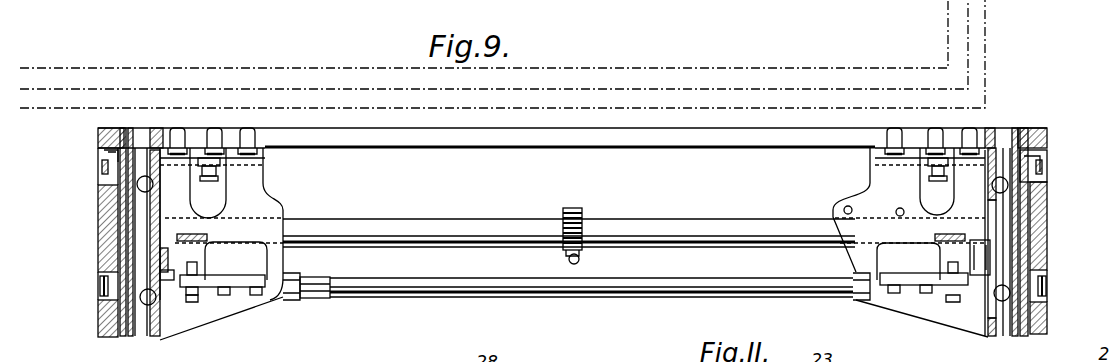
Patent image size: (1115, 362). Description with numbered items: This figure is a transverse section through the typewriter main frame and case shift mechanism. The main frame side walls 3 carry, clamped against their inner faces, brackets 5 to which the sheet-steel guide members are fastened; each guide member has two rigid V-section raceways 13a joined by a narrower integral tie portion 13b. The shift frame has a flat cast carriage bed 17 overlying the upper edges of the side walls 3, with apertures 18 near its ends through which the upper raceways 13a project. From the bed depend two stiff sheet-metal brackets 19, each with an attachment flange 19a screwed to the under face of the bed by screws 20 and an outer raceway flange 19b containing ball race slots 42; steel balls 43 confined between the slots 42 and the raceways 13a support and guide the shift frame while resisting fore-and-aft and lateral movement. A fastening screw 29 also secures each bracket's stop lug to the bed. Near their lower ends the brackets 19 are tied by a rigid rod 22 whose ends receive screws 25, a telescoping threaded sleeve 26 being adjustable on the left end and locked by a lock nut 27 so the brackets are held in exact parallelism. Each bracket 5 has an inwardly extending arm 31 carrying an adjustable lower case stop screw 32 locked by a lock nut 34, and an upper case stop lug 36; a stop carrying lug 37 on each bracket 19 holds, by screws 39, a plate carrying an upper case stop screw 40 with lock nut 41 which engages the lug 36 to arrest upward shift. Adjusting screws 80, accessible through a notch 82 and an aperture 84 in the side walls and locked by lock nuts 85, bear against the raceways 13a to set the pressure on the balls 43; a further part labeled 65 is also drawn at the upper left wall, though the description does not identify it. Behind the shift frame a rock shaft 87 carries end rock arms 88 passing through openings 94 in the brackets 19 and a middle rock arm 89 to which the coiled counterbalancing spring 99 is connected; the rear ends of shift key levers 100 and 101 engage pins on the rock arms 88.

The side wall 3 is at (100, 207).
The bracket 5 is at (100, 262).
The raceway 13a is at (134, 156).
The tie portion 13b is at (100, 250).
The carriage bed 17 is at (97, 137).
The aperture 18 is at (125, 130).
The bracket 19 is at (276, 213).
The attachment flange 19a is at (192, 150).
The raceway flange 19b is at (168, 335).
The screw 20 is at (182, 150).
The rod 22 is at (438, 286).
The screw 25 is at (290, 302).
The sleeve 26 is at (301, 280).
The lock nut 27 is at (333, 284).
The fastening screw 29 is at (215, 152).
The arm 31 is at (228, 163).
The lower case stop screw 32 is at (572, 183).
The lock nut 34 is at (242, 181).
The upper case stop lug 36 is at (208, 239).
The stop carrying lug 37 is at (238, 273).
The screw 39 is at (223, 294).
The upper case stop screw 40 is at (205, 303).
The lock nut 41 is at (222, 297).
The ball race slot 42 is at (156, 201).
The ball 43 is at (153, 185).
The nut 65 is at (97, 155).
The adjusting screw 80 is at (100, 172).
The notch 82 is at (100, 193).
The aperture 84 is at (100, 275).
The lock nut 85 is at (100, 312).
The rock shaft 87 is at (663, 226).
The rock arm 88 is at (236, 261).
The rock arm 89 is at (579, 260).
The opening 94 is at (975, 268).
The counterbalancing spring 99 is at (572, 207).
The shift key lever 100 is at (162, 283).
The shift key lever 101 is at (988, 268).